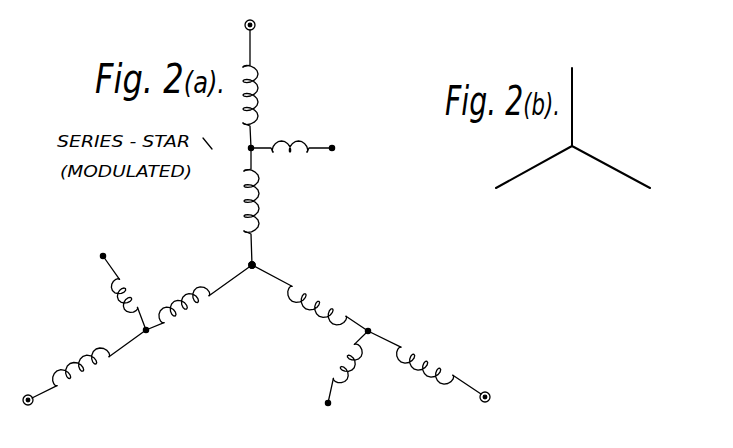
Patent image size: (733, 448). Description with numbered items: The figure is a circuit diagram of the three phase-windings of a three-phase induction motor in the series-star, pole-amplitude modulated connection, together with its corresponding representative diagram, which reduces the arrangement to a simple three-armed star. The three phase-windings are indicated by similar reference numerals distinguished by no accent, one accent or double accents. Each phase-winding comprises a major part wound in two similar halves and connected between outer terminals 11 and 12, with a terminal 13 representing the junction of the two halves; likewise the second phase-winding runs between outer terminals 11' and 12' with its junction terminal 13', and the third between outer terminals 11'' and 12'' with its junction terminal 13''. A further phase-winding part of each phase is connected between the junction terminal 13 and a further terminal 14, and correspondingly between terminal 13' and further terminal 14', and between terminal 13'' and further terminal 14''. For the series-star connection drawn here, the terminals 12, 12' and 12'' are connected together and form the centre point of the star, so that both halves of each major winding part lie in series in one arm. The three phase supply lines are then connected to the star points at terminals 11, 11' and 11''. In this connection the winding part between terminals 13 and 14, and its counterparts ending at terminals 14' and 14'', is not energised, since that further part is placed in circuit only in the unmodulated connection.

The outer terminal 11 is at (265, 17).
The outer terminal 11' is at (502, 386).
The outer terminal 11'' is at (50, 410).
The outer terminal 12 is at (274, 257).
The outer terminal 12' is at (292, 257).
The outer terminal 12'' is at (308, 257).
The terminal 13 is at (234, 153).
The terminal 13' is at (386, 318).
The terminal 13'' is at (167, 346).
The further terminal 14 is at (346, 141).
The further terminal 14' is at (307, 401).
The further terminal 14'' is at (125, 256).